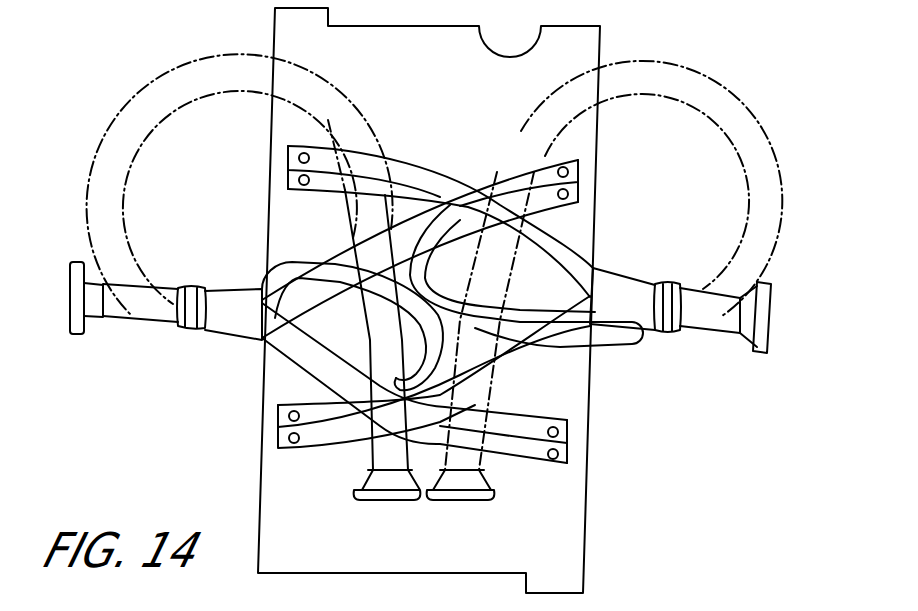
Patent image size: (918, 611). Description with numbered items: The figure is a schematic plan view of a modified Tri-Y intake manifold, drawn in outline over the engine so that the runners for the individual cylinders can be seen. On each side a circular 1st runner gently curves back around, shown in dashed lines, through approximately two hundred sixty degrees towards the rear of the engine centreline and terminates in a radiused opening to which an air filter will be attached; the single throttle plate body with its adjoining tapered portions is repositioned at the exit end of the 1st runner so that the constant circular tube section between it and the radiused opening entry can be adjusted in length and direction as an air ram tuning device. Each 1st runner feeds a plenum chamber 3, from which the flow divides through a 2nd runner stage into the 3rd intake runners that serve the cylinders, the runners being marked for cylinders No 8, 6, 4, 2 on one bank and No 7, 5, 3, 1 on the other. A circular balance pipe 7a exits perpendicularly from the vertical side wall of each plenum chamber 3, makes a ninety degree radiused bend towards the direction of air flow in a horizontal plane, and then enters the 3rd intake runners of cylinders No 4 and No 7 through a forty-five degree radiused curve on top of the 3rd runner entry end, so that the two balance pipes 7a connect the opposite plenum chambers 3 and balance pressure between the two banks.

The 1st runner 1st is at (752, 248).
The 2nd runner 2nd is at (562, 260).
The 3rd intake runners 3rd is at (392, 172).
The plenum chamber 3 is at (420, 354).
The balance pipe 7a is at (283, 268).
The cylinder No 8 is at (335, 170).
The cylinder No 6 is at (269, 182).
The cylinder No 4 is at (401, 363).
The cylinder No 2 is at (344, 430).
The cylinder No 7 is at (550, 178).
The cylinder No 5 is at (599, 191).
The cylinder No 1 is at (444, 387).